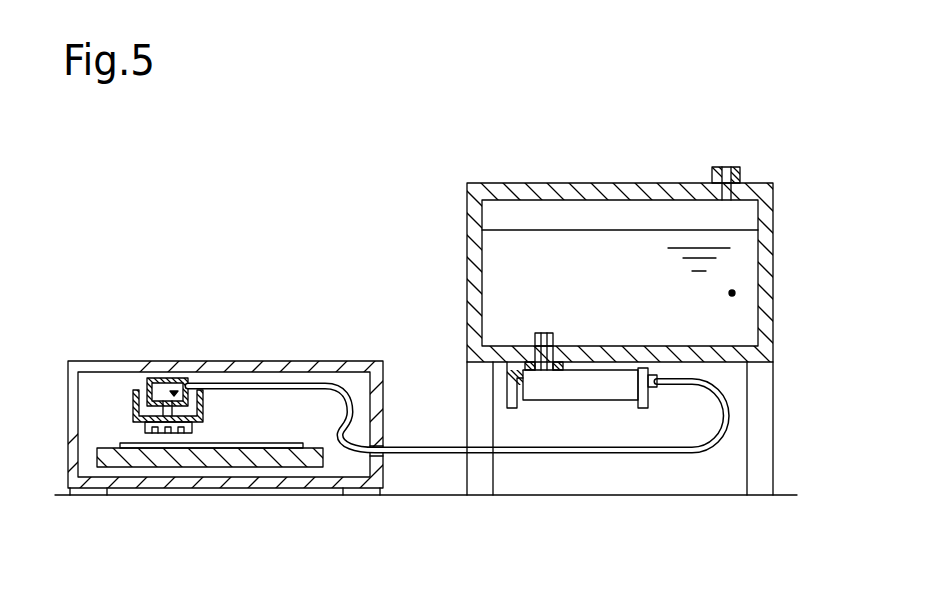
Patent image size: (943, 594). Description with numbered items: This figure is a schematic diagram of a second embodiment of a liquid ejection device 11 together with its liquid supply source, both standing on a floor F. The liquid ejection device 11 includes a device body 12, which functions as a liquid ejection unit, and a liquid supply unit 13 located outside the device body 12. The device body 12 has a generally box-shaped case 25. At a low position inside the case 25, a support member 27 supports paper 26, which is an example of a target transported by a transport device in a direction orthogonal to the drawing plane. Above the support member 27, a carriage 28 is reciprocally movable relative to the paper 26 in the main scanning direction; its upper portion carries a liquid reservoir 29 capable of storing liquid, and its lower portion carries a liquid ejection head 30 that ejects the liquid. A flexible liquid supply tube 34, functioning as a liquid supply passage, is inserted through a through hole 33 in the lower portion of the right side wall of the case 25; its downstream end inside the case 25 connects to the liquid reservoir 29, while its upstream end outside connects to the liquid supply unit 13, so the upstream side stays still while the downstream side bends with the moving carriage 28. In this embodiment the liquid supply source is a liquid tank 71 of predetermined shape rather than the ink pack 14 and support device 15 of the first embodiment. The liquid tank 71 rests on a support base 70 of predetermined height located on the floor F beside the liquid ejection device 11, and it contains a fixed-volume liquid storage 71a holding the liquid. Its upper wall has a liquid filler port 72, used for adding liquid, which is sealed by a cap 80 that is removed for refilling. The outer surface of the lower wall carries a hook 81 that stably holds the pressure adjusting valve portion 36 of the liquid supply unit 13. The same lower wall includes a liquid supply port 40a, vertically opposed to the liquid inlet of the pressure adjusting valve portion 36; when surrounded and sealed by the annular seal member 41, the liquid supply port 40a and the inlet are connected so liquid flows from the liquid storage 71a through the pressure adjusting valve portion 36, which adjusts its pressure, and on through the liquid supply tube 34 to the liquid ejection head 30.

The liquid ejection device 11 is at (262, 232).
The device body 12 is at (148, 305).
The liquid supply unit 13 is at (565, 410).
The ink pack 14 is at (602, 150).
The support device 15 is at (787, 373).
The case 25 is at (92, 361).
The paper 26 is at (234, 447).
The support member 27 is at (319, 446).
The carriage 28 is at (133, 393).
The liquid reservoir 29 is at (178, 379).
The liquid ejection head 30 is at (144, 425).
The through hole 33 is at (383, 453).
The liquid supply tube 34 is at (432, 447).
The pressure adjusting valve portion 36 is at (592, 404).
The liquid supply port 40a is at (545, 333).
The seal member 41 is at (557, 364).
The support base 70 is at (773, 395).
The liquid tank 71 is at (773, 241).
The liquid storage 71a is at (732, 293).
The liquid filler port 72 is at (723, 173).
The cap 80 is at (741, 170).
The hook 81 is at (653, 395).
The floor F is at (782, 494).